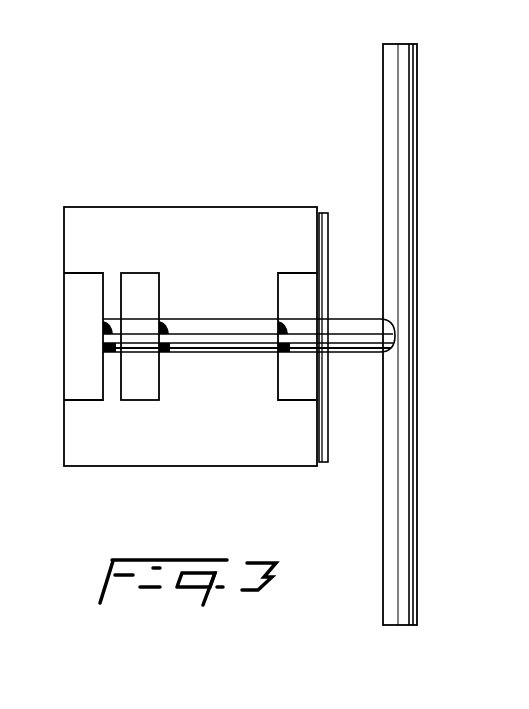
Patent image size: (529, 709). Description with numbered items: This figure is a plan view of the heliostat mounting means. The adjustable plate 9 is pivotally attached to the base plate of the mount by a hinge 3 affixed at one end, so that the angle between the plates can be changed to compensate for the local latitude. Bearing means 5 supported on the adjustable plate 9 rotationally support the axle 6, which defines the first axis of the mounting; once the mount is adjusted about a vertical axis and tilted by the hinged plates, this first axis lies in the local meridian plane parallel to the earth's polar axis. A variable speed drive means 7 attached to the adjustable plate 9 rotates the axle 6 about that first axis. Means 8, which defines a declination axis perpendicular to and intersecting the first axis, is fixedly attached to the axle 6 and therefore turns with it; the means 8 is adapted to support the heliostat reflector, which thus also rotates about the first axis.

The hinge 3 is at (326, 463).
The bearing means 5 is at (277, 273).
The axle 6 is at (340, 319).
The variable speed drive means 7 is at (90, 273).
The means defining a declination axis 8 is at (417, 53).
The adjustable plate 9 is at (136, 466).